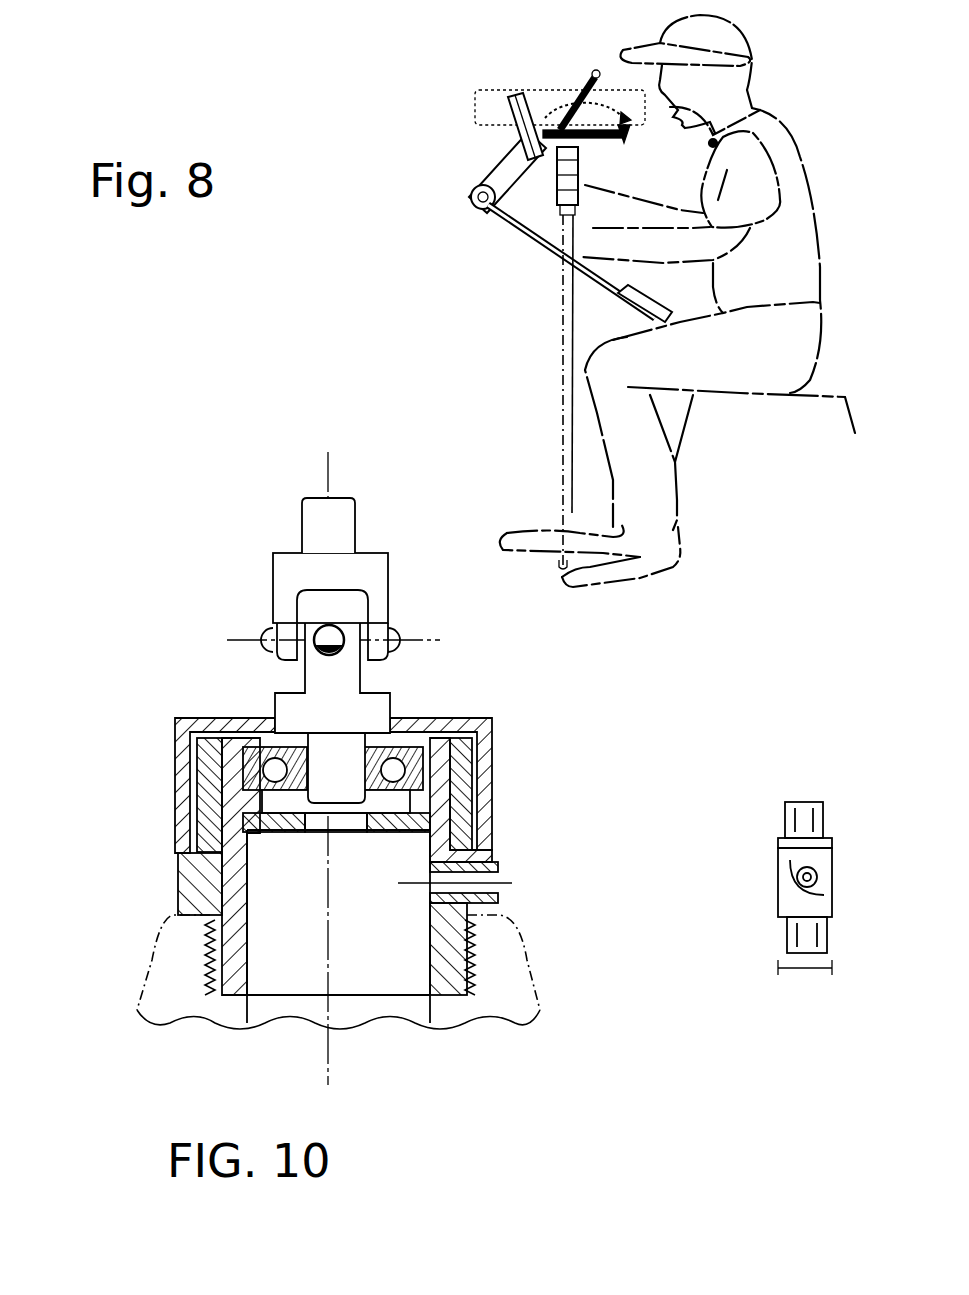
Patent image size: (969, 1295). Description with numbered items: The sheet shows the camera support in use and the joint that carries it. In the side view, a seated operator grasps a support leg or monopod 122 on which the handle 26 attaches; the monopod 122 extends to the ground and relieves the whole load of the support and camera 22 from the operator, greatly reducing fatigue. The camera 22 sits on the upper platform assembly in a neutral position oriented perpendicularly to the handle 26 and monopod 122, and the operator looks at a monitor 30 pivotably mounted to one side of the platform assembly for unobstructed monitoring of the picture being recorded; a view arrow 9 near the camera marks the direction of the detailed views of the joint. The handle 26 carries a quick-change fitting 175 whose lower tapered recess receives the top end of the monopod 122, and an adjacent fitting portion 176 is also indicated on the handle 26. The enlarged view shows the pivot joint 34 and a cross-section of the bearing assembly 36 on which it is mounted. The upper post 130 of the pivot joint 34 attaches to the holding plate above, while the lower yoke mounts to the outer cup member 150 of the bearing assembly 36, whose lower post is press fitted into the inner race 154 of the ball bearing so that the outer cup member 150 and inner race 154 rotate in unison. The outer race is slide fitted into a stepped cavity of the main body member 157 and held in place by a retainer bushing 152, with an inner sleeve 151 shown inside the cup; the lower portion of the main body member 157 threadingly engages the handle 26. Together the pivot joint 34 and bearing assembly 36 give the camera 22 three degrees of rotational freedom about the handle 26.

In FIG. 8, the camera 22 is at (560, 88).
In FIG. 8, the monitor 30 is at (515, 110).
In FIG. 8, the handle 26 is at (550, 197).
In FIG. 10, the handle 26 is at (512, 998).
In FIG. 8, the monopod 122 is at (568, 312).
In FIG. 8, the view direction arrow 9 is at (618, 190).
In FIG. 10, the upper post 130 is at (315, 517).
In FIG. 10, the pivot joint 34 is at (262, 588).
In FIG. 10, the inner race 154 is at (267, 723).
In FIG. 10, the outer cup member 150 is at (175, 727).
In FIG. 10, the inner sleeve 151 is at (178, 837).
In FIG. 10, the retainer bushing 152 is at (205, 822).
In FIG. 10, the main body member 157 is at (178, 883).
In FIG. 10, the quick-change fitting 175 is at (523, 867).
In FIG. 10, the lower ring 176 is at (507, 888).
In FIG. 10, the bearing assembly 36 is at (282, 804).